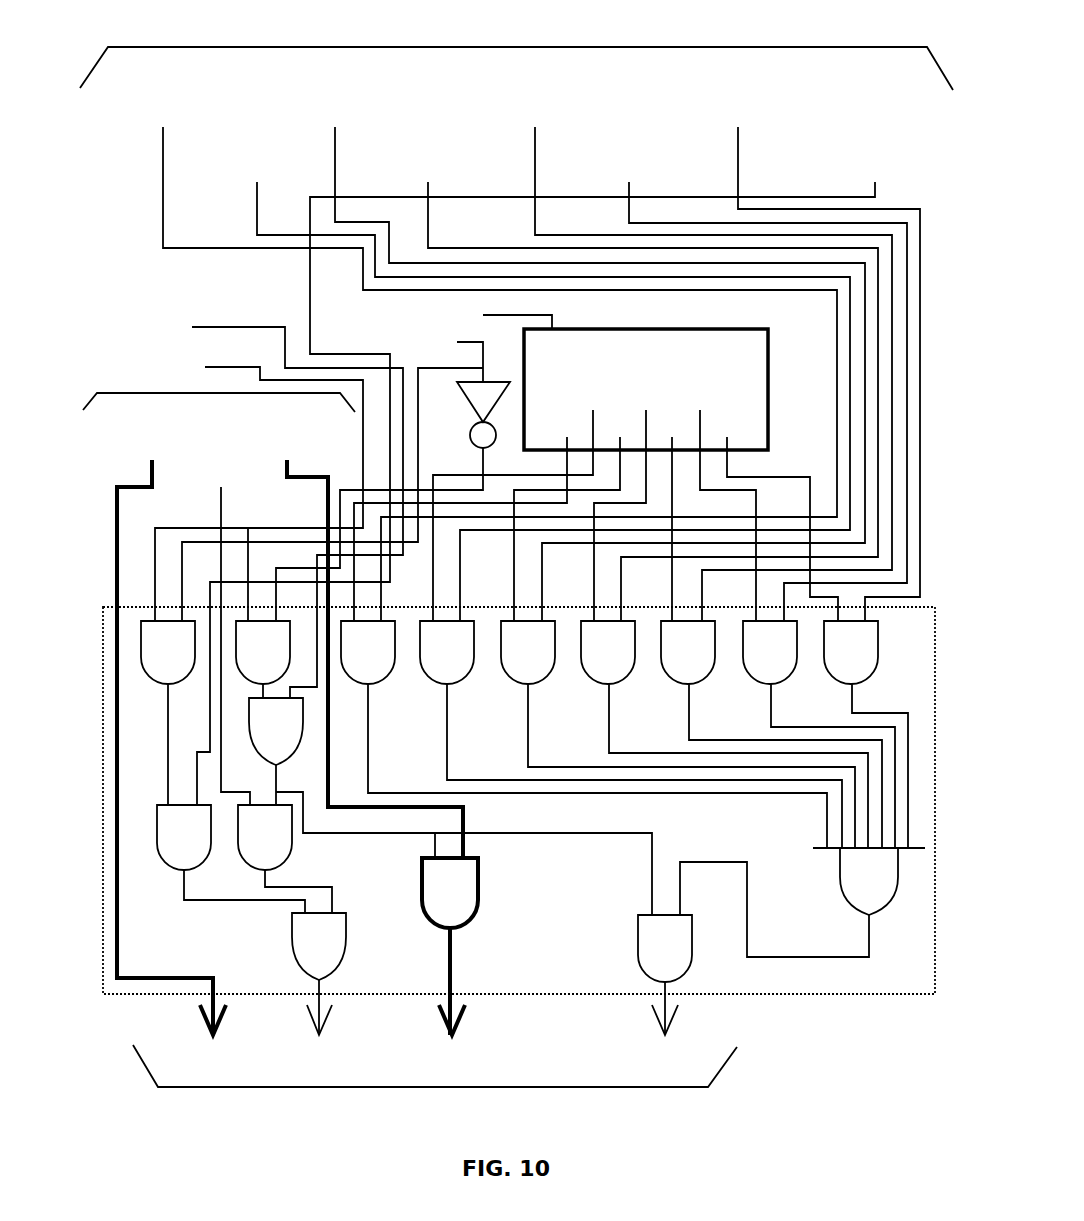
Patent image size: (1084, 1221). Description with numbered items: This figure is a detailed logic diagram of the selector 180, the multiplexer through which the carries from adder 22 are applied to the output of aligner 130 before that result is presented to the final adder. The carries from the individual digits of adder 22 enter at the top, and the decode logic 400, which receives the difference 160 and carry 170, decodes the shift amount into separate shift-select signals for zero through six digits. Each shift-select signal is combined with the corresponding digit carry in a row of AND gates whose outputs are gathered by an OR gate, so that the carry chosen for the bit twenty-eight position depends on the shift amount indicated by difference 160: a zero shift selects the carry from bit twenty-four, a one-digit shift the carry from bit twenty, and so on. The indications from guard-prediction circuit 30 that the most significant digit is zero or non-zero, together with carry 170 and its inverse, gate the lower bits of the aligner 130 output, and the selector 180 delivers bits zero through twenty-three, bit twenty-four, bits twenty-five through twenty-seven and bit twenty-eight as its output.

The adder 22 is at (516, 406).
The guard-prediction circuit 30 is at (258, 502).
The aligner 130 is at (273, 713).
The difference 160 is at (465, 317).
The carry 170 is at (346, 477).
The selector 180 is at (883, 995).
The decode logic 400 is at (770, 370).